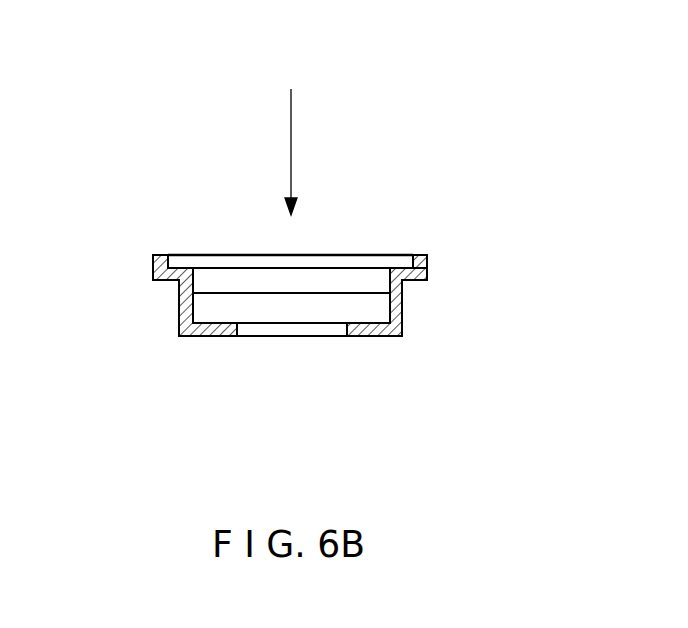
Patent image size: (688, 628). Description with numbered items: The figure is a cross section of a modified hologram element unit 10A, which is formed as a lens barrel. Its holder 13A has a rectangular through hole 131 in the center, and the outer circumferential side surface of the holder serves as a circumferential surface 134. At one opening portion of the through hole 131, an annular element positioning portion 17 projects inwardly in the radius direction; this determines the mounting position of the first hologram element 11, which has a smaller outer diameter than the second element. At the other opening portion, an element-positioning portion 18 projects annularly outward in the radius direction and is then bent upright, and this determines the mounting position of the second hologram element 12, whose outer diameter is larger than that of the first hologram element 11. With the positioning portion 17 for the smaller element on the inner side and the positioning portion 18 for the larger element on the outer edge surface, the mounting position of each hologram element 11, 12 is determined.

The hologram element unit 10A is at (311, 311).
The first hologram element 11 is at (318, 312).
The second hologram element 12 is at (372, 255).
The holder 13A is at (182, 351).
The through hole 131 is at (378, 283).
The circumferential surface 134 is at (403, 320).
The element positioning portion 17 is at (370, 335).
The element-positioning portion 18 is at (150, 305).